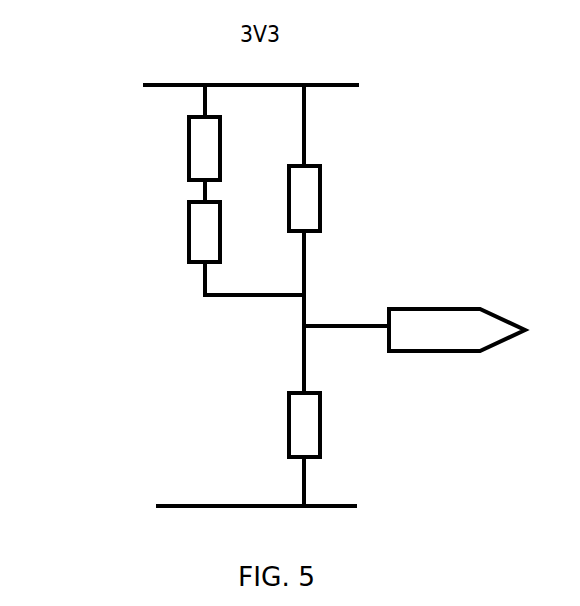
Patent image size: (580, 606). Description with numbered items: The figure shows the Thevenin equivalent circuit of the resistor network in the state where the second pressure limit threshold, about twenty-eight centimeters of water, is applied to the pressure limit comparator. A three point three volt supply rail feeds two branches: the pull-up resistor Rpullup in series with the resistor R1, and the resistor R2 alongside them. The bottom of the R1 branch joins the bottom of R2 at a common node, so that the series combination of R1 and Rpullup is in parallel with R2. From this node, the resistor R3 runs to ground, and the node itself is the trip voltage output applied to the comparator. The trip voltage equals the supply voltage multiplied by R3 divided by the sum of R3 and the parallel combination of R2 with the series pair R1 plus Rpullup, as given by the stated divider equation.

The pull-up resistor Rpullup is at (126, 148).
The resistor R1 is at (152, 232).
The resistor R2 is at (367, 198).
The resistor R3 is at (366, 425).